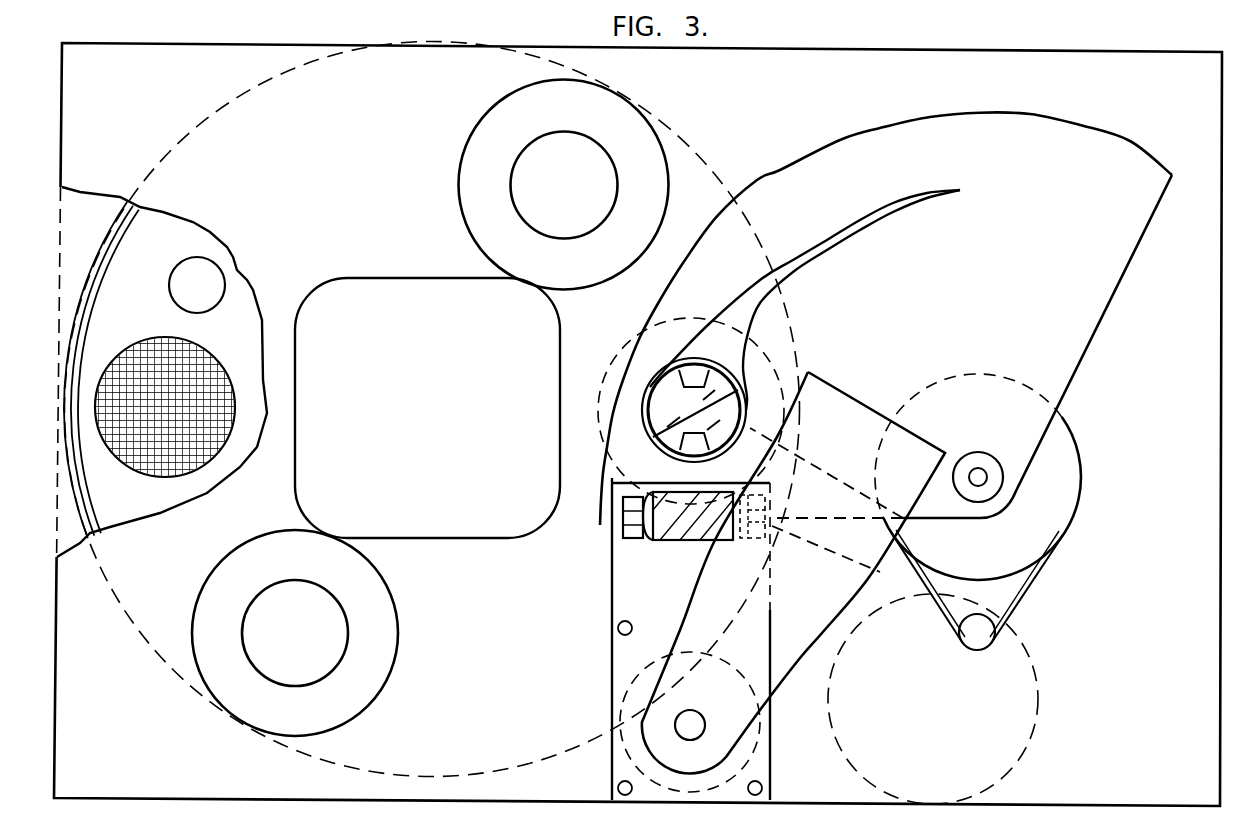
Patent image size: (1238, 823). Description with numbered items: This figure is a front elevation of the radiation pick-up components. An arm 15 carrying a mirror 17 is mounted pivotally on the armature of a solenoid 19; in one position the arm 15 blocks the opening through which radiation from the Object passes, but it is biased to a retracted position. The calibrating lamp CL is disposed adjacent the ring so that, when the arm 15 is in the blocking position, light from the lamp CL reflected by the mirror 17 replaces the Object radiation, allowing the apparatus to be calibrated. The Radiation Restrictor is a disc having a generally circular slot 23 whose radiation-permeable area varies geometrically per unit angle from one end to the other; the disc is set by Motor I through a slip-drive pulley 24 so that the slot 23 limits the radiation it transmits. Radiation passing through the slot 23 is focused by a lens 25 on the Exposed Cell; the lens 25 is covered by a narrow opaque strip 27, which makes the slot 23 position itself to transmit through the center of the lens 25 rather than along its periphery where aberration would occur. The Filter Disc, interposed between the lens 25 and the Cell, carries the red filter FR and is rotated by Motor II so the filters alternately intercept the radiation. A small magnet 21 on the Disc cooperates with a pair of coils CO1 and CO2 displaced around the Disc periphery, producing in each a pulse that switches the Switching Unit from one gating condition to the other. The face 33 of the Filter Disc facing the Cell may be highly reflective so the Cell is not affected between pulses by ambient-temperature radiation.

The face of the Filter Disc 33 is at (160, 240).
The magnet 21 is at (207, 278).
The red filter FR is at (187, 360).
The Motor II is at (405, 303).
The coil CO1 is at (525, 169).
The coil CO2 is at (333, 645).
The slip-drive pulley 24 is at (1060, 504).
The slot 23 is at (748, 297).
The lens 25 is at (672, 405).
The opaque strip 27 is at (690, 373).
The solenoid 19 is at (756, 752).
The arm 15 is at (787, 648).
The calibrating lamp CL is at (688, 534).
The mirror 17 is at (838, 558).
The Motor I is at (1042, 709).